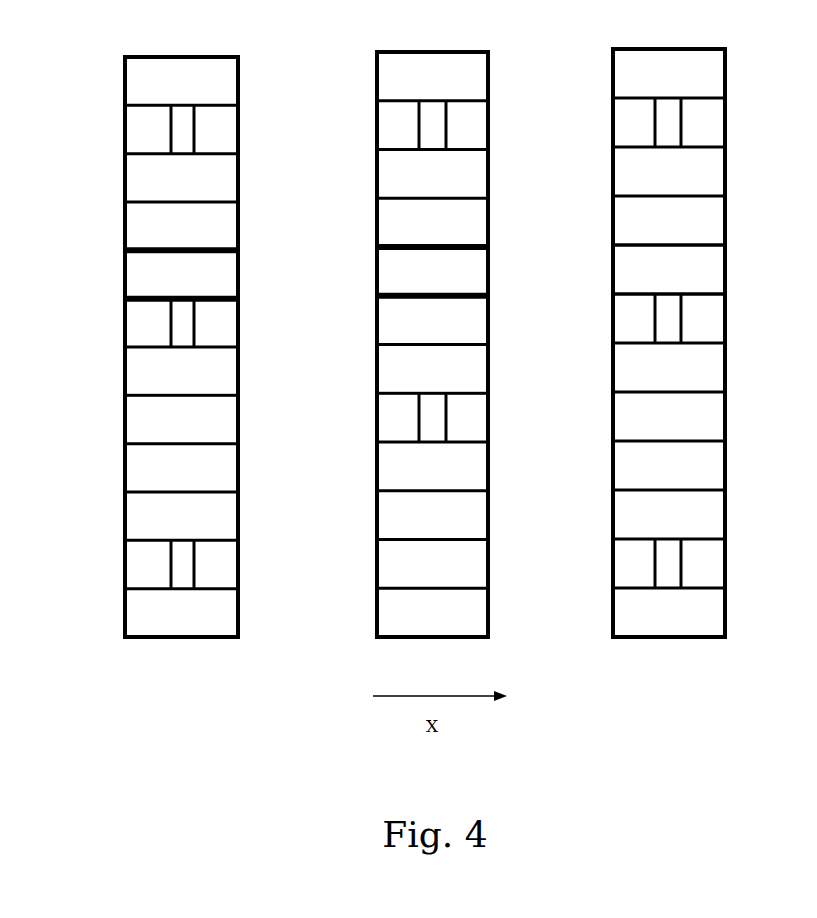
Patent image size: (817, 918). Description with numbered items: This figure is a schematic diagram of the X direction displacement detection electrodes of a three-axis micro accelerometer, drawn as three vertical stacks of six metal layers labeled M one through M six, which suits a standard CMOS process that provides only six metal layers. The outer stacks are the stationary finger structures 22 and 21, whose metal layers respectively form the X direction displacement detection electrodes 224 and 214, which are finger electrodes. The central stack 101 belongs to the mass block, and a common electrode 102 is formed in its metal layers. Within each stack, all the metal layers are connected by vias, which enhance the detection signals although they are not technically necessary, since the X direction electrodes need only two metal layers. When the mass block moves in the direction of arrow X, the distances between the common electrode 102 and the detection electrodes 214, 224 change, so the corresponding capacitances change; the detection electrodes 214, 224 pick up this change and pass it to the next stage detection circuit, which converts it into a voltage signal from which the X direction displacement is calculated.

The finger structure 22 is at (152, 323).
The filler cell / metal stack 101 is at (459, 323).
The finger structure 21 is at (701, 323).
The X direction displacement detection electrode 224 is at (152, 371).
The X direction displacement detection electrode 214 is at (701, 367).
The common electrode 102 is at (459, 417).